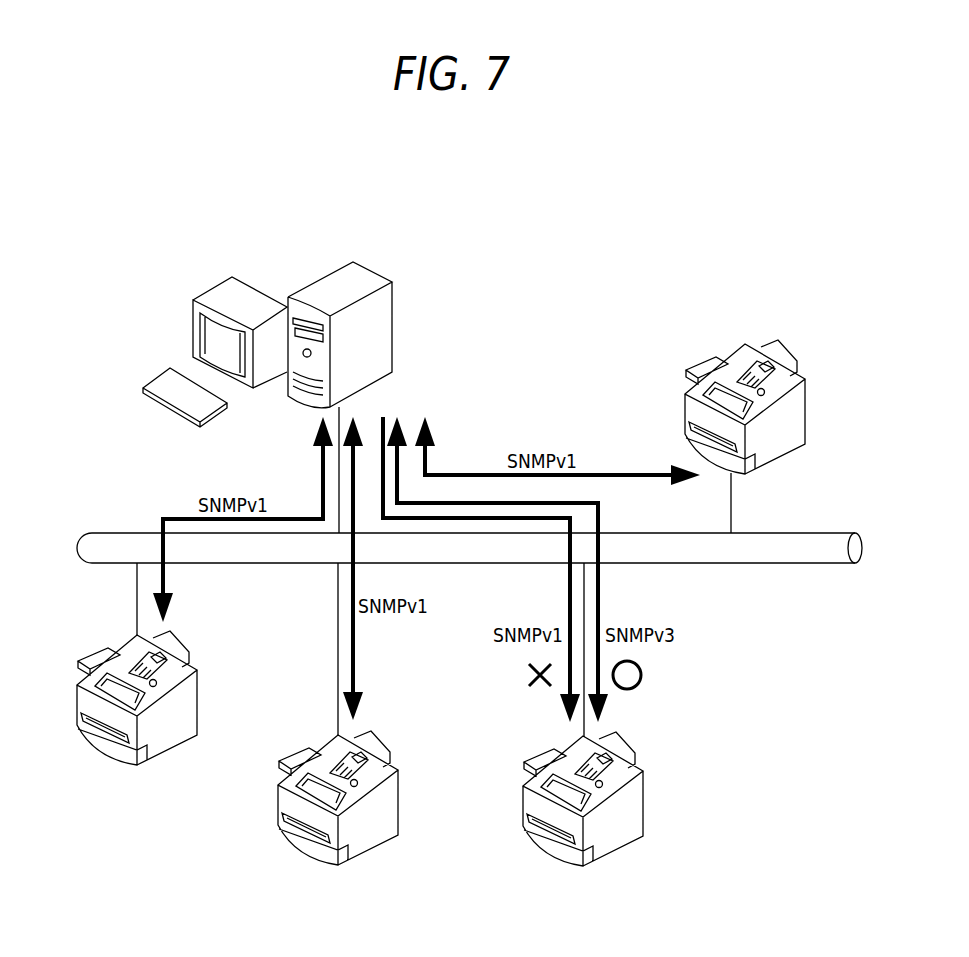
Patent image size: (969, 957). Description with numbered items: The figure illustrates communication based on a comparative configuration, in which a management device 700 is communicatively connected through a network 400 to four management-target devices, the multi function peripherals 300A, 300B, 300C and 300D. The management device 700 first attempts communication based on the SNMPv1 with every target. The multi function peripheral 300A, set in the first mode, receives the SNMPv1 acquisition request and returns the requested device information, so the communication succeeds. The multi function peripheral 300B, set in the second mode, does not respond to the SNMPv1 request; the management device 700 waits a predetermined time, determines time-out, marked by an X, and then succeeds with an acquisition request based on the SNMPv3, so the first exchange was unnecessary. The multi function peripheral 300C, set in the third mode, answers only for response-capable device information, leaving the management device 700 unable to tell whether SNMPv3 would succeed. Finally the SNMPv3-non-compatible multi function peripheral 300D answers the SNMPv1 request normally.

The management device 700 is at (370, 272).
The network 400 is at (120, 533).
The multi function peripheral 300A is at (105, 758).
The multi function peripheral 300B is at (555, 857).
The multi function peripheral 300C is at (310, 857).
The multi function peripheral 300D is at (745, 346).